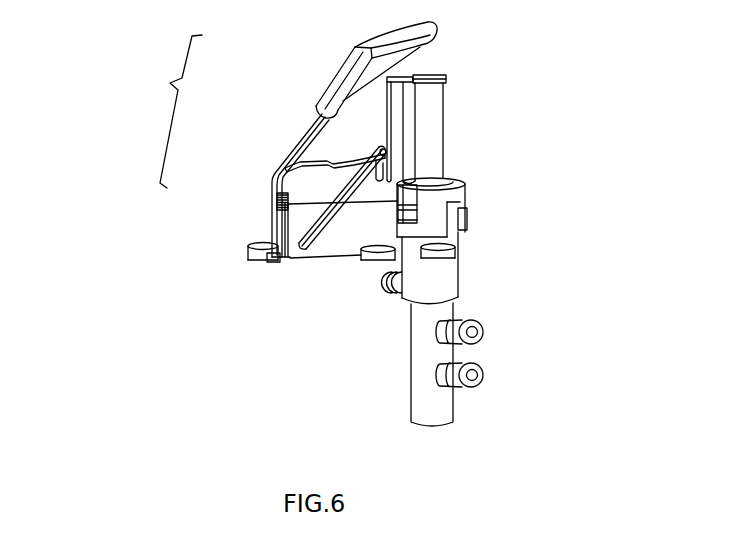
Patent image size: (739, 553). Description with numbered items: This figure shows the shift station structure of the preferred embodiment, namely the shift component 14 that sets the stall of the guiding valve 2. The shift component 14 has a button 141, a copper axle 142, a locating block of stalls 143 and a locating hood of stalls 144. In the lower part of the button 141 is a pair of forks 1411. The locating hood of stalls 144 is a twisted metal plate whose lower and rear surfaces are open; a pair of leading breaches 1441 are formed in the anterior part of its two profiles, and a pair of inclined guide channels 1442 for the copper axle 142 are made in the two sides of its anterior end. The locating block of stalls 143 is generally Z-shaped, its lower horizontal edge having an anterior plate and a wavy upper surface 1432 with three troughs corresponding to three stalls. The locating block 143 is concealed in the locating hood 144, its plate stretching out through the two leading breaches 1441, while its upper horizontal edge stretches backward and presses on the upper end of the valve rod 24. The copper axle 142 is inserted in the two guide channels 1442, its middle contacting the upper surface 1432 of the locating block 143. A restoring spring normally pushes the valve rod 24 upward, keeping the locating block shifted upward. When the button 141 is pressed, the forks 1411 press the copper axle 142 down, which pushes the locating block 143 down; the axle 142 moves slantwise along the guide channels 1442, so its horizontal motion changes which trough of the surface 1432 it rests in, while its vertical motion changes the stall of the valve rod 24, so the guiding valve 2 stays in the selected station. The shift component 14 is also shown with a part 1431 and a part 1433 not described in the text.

The guiding valve 2 is at (430, 273).
The shift component 14 is at (168, 111).
The valve rod 24 is at (427, 133).
The button 141 is at (383, 37).
The fork 1411 is at (373, 102).
The copper axle 142 is at (383, 155).
The locating block of stalls 143 is at (307, 179).
The bracket engaging portion 1431 is at (273, 202).
The locating hood of stalls 144 is at (300, 220).
The leading breach 1441 is at (273, 241).
The inclined guide channel 1442 is at (310, 243).
The upper surface of lower horizontal edge 1432 is at (379, 167).
The cylinder cap 1433 is at (443, 75).